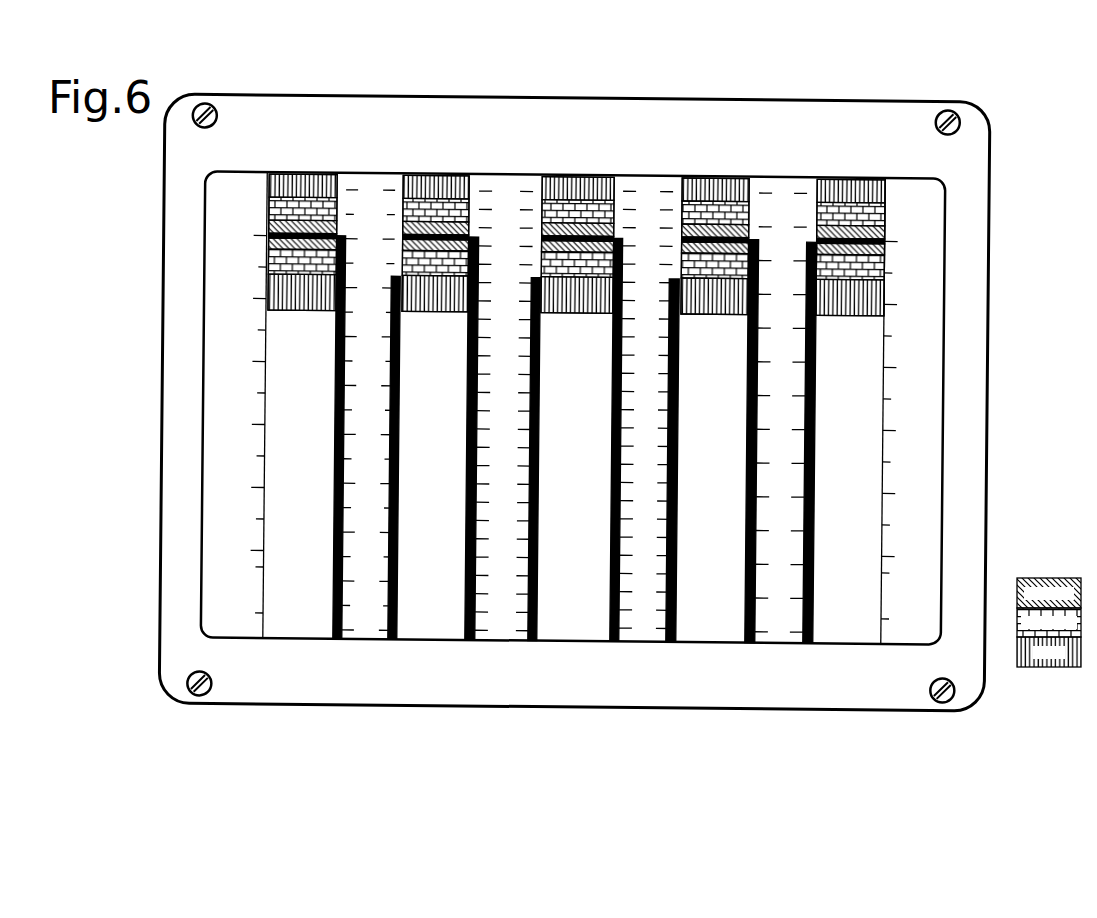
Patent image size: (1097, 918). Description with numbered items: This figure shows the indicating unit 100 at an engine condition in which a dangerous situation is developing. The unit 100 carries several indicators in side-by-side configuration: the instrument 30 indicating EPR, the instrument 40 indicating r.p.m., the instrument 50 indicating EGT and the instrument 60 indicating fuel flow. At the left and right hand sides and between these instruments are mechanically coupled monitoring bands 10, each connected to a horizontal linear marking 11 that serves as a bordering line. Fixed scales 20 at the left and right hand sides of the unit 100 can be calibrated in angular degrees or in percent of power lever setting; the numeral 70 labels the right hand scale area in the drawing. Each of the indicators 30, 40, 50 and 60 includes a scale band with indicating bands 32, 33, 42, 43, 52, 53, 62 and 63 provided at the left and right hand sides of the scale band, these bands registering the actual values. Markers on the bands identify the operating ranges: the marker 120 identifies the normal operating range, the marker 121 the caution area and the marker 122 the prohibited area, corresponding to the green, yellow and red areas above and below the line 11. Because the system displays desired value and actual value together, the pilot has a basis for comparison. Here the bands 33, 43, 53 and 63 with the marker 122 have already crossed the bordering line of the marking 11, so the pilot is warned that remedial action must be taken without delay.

The indicating unit 100 is at (158, 283).
The monitoring band 10 is at (307, 172).
The linear marking 11 is at (298, 220).
The fixed scale 20 is at (256, 618).
The EPR indicator 30 is at (361, 645).
The indicating band 32 is at (333, 640).
The indicating band 33 is at (392, 640).
The r.p.m. indicator 40 is at (500, 645).
The indicating band 42 is at (466, 640).
The indicating band 43 is at (532, 640).
The EGT indicator 50 is at (643, 645).
The indicating band 52 is at (611, 640).
The indicating band 53 is at (670, 640).
The fuel flow indicator 60 is at (778, 645).
The indicating band 62 is at (745, 640).
The indicating band 63 is at (805, 640).
The right reference scale 70 is at (877, 628).
The normal operating range marker 120 is at (868, 233).
The caution area marker 121 is at (875, 218).
The prohibited area marker 122 is at (878, 193).